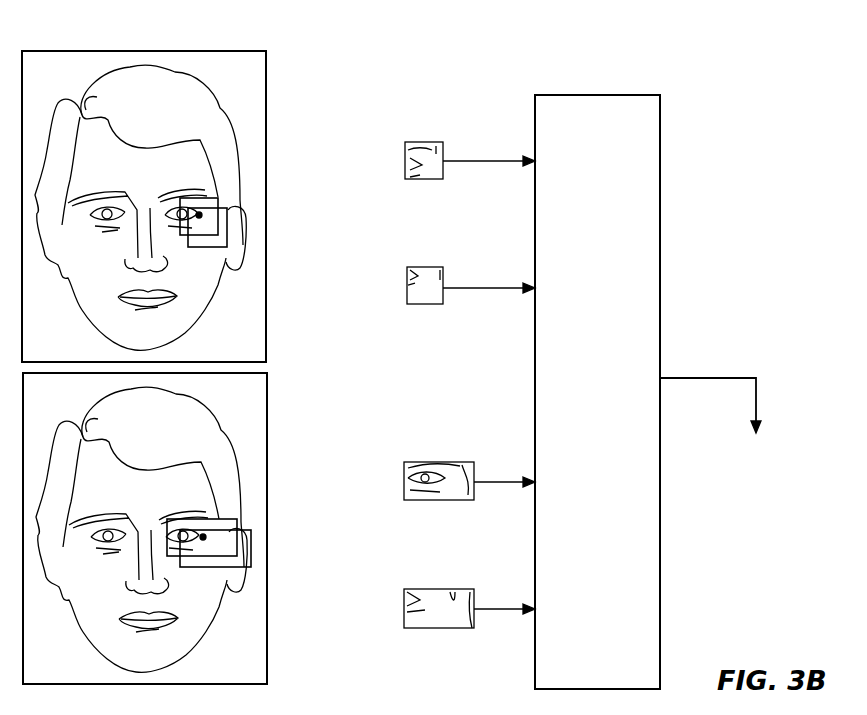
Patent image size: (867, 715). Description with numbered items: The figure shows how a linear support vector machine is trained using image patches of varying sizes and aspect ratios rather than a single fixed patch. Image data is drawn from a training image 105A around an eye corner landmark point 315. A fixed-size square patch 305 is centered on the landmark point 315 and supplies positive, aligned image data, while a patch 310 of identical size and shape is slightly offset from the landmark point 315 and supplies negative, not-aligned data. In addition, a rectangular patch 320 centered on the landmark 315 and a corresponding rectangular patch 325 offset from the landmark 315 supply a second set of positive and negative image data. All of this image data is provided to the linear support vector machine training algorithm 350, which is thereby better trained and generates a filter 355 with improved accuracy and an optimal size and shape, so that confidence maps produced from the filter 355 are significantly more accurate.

The training image 105A is at (239, 51).
The patch 305 is at (208, 198).
The patch 310 is at (213, 247).
The landmark point 315 is at (199, 215).
The rectangular patch 320 is at (215, 519).
The rectangular patch 325 is at (214, 567).
The linear support vector machine training algorithm 350 is at (598, 95).
The filter 355 is at (721, 378).